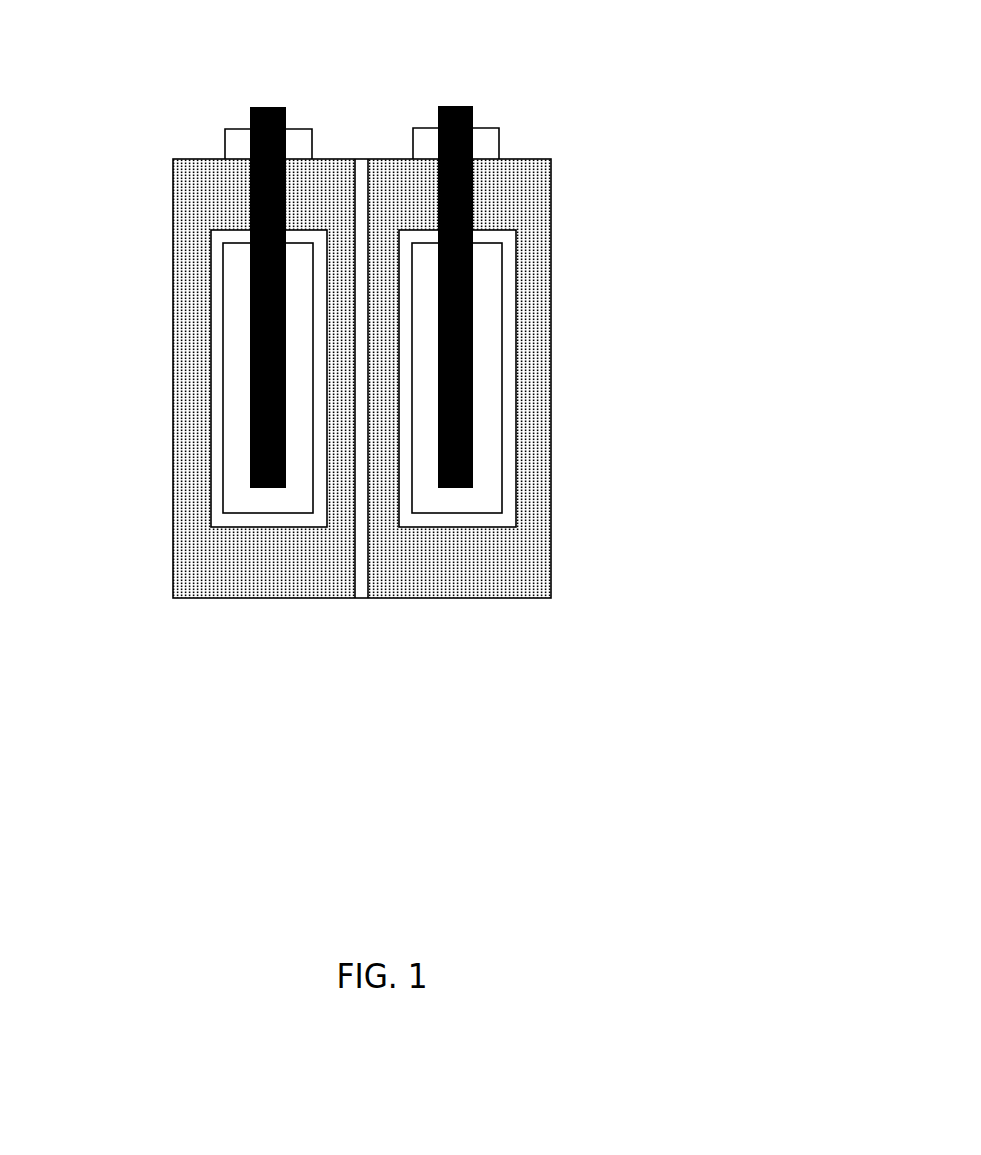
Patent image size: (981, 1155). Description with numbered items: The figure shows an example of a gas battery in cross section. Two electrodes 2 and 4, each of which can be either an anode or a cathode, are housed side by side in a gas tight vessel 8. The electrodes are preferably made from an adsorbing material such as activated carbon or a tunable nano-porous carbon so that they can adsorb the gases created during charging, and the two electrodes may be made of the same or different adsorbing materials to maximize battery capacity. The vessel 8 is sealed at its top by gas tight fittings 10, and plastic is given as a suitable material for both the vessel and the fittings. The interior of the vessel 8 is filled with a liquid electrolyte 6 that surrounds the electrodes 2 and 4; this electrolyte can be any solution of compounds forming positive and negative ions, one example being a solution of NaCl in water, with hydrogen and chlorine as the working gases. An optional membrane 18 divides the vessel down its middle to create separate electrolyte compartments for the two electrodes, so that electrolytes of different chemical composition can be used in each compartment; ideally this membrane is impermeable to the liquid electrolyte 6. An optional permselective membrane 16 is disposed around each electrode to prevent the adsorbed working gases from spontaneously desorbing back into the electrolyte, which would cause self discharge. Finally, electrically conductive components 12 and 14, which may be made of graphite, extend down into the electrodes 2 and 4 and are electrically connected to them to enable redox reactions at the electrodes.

The electrode 2 is at (488, 477).
The electrode 4 is at (235, 468).
The liquid electrolyte 6 is at (522, 190).
The gas tight vessel 8 is at (550, 222).
The gas tight fittings 10 is at (223, 145).
The electrically conductive component 12 is at (473, 190).
The electrically conductive component 14 is at (250, 200).
The permselective membrane 16 is at (227, 520).
The membrane 18 is at (363, 586).